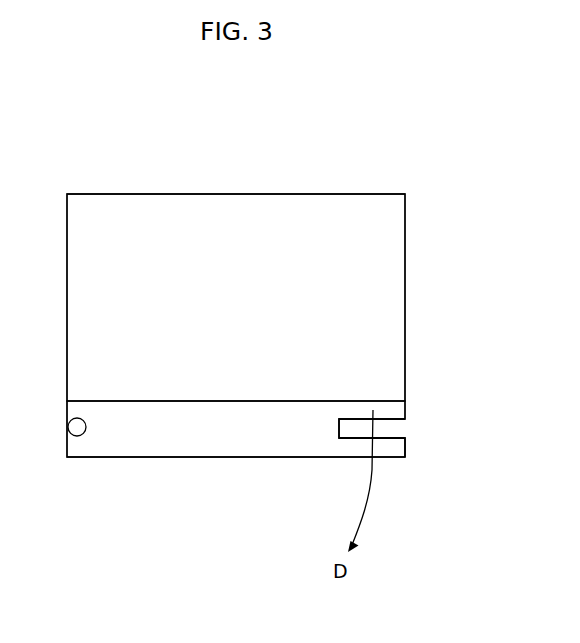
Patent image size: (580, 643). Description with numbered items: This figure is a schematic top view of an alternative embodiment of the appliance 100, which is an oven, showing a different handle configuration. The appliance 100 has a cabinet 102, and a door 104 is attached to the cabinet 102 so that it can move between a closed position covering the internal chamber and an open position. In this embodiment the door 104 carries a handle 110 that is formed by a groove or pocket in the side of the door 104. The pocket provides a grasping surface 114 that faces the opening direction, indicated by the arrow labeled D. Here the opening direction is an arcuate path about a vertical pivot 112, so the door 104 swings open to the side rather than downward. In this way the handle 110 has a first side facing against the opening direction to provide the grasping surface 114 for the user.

The appliance 100 is at (352, 168).
The cabinet 102 is at (161, 213).
The door 104 is at (217, 457).
The handle 110 is at (382, 448).
The vertical pivot 112 is at (77, 427).
The grasping surface 114 is at (397, 438).